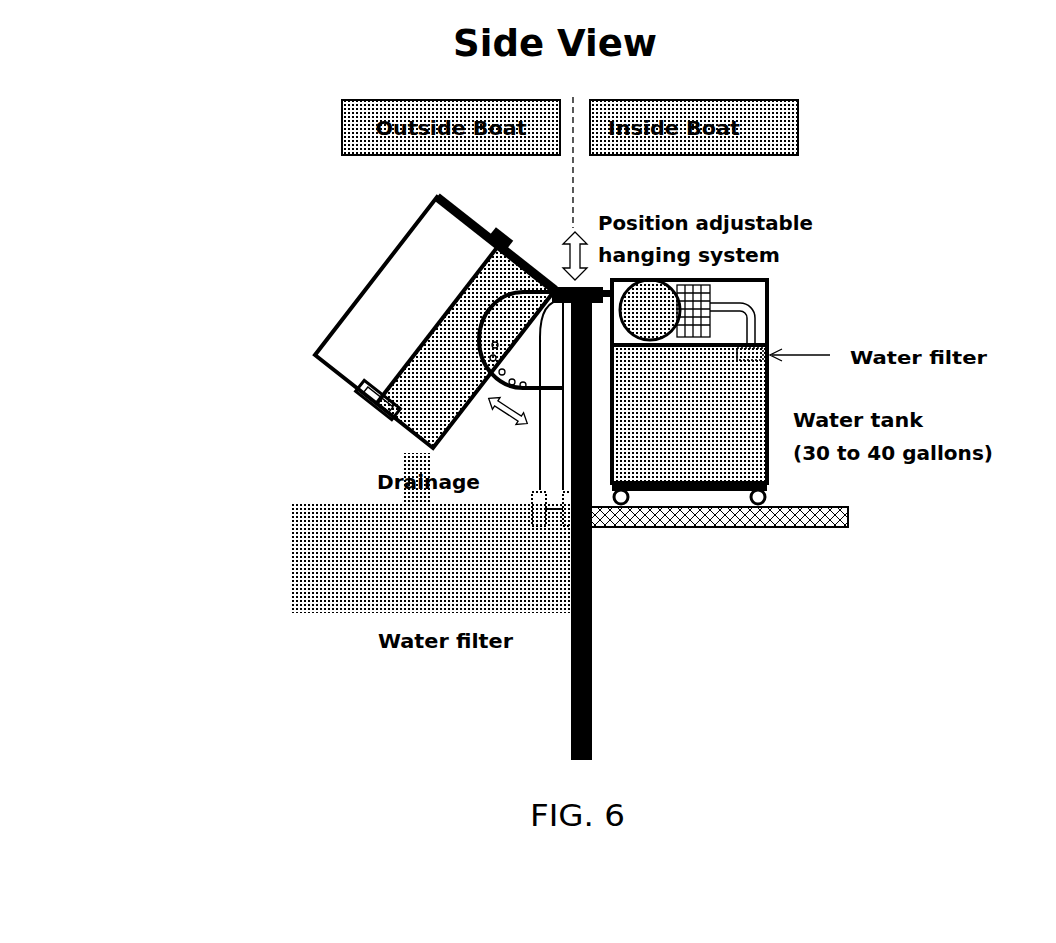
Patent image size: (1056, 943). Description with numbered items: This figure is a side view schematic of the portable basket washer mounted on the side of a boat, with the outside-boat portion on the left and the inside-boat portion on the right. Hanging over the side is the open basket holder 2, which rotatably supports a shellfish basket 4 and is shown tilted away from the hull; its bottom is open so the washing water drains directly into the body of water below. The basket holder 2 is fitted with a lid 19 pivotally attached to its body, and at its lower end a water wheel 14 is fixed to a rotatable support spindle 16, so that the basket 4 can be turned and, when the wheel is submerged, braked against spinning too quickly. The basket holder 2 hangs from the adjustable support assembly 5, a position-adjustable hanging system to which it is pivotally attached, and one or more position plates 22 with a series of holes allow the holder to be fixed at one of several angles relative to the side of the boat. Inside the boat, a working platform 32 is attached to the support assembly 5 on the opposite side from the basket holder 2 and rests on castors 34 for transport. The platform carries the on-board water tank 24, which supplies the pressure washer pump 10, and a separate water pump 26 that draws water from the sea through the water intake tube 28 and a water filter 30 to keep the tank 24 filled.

The basket holder 2 is at (367, 280).
The shellfish basket 4 is at (400, 328).
The adjustable support assembly 5 is at (572, 293).
The pressure washer pump 10 is at (653, 322).
The water wheel 14 is at (353, 387).
The rotatable support spindle 16 is at (377, 405).
The lid 19 is at (437, 197).
The position plates 22 is at (507, 327).
The water tank 24 is at (727, 440).
The water pump 26 is at (712, 312).
The water intake tube 28 is at (553, 457).
The water filter 30 is at (533, 540).
The working platform 32 is at (852, 517).
The castors 34 is at (766, 495).